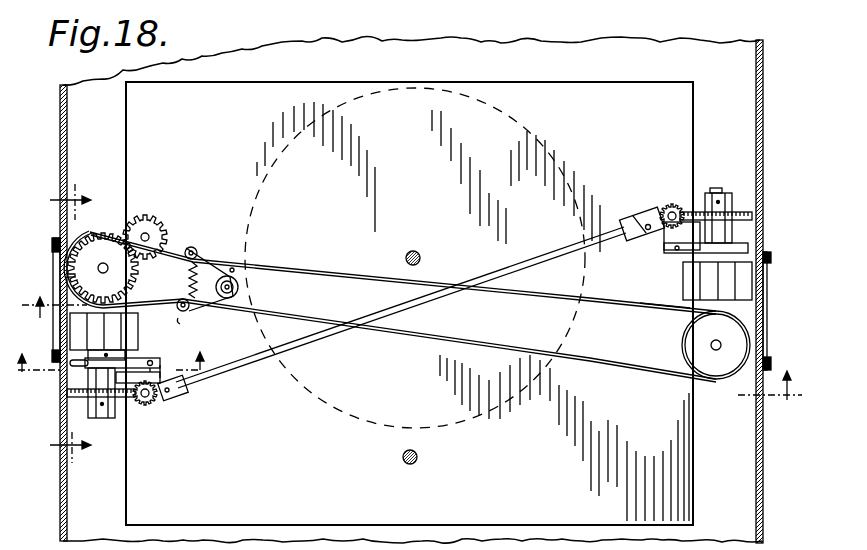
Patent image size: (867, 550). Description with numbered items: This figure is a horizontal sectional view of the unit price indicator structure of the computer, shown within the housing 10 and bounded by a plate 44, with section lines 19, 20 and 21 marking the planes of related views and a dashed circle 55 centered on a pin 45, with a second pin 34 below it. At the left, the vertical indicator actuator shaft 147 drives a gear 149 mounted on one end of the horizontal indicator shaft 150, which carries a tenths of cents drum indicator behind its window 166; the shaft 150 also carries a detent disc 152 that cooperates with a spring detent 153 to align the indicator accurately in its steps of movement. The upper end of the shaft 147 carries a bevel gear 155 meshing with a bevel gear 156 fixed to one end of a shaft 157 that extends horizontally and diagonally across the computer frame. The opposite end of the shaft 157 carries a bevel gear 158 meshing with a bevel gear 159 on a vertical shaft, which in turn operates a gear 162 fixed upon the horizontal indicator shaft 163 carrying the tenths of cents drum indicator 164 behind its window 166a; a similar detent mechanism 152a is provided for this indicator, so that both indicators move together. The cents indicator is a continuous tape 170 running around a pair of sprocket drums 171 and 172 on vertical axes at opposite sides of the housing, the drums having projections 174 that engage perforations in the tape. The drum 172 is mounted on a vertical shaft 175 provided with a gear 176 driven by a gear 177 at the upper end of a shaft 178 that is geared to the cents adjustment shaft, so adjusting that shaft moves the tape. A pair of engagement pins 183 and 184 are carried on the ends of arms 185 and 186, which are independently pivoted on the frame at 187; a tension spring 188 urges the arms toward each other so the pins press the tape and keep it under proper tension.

The housing 10 is at (66, 514).
The section line 19 is at (412, 366).
The section line 20 is at (57, 323).
The section line 21 is at (118, 376).
The pin 34 is at (418, 456).
The support plate 44 is at (333, 81).
The center pin 45 is at (420, 252).
The circular area 55 is at (340, 413).
The vertical indicator actuator shaft 147 is at (152, 408).
The gear 149 is at (125, 403).
The horizontal indicator shaft 150 is at (100, 418).
The detent disc 152 is at (66, 395).
The rack mount 152a is at (742, 247).
The spring detent 153 is at (142, 365).
The bevel gear 155 is at (158, 404).
The bevel gear 156 is at (155, 373).
The shaft 157 is at (230, 371).
The bevel gear 158 is at (661, 210).
The bevel gear 159 is at (672, 205).
The gear 162 is at (742, 212).
The horizontal indicator shaft 163 is at (716, 192).
The tenths of cents drum indicator 164 is at (683, 280).
The window 166 is at (52, 256).
The window 166a is at (784, 301).
The continuous tape 170 is at (598, 363).
The sprocket drum 171 is at (687, 341).
The sprocket drum 172 is at (113, 250).
The projections 174 is at (692, 316).
The vertical shaft 175 is at (102, 262).
The gear 176 is at (67, 277).
The gear 177 is at (147, 215).
The shaft 178 is at (192, 247).
The engagement pin 183 is at (200, 248).
The engagement pin 184 is at (178, 318).
The arm 185 is at (210, 295).
The arm 186 is at (233, 269).
The pivot 187 is at (238, 287).
The tension spring 188 is at (174, 280).